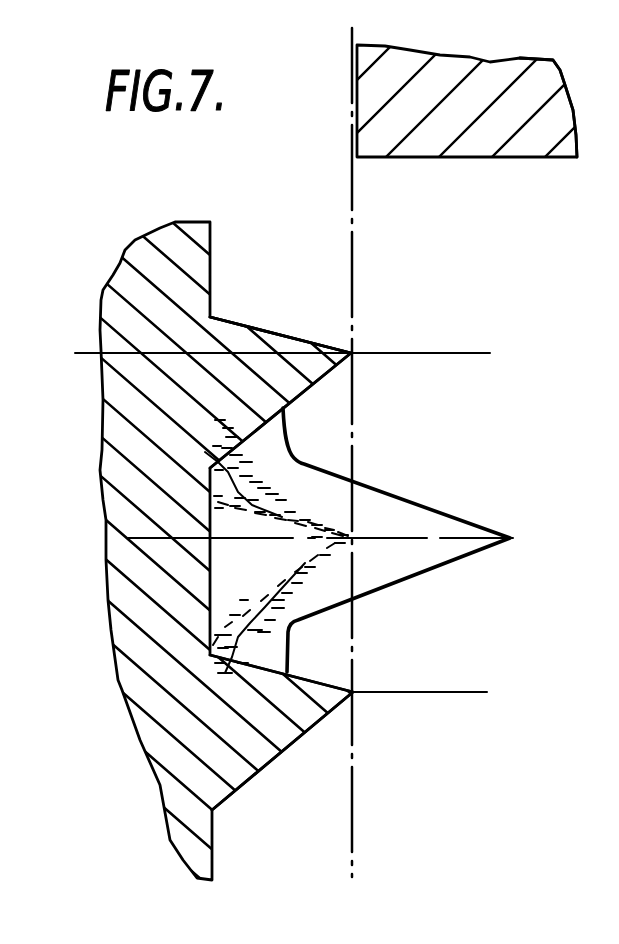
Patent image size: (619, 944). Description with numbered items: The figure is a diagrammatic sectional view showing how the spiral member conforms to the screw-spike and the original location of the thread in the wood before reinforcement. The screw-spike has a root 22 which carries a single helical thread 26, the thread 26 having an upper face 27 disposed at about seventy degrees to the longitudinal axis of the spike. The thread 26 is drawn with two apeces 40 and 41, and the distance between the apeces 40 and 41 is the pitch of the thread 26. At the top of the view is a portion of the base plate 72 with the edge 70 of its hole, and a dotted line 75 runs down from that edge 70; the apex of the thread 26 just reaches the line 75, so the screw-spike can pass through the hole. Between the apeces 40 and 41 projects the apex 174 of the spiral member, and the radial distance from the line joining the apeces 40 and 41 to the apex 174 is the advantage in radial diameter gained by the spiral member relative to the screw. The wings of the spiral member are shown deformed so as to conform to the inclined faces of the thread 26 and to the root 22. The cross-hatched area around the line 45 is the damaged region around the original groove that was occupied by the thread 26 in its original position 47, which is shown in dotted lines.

The root 22 is at (211, 248).
The helical thread 26 is at (311, 333).
The upper face 27 is at (272, 331).
The apex 40 is at (309, 352).
The apex 41 is at (376, 732).
The line 45 is at (277, 507).
The original position 47 is at (240, 546).
The apex of the spiral member 174 is at (513, 537).
The dotted line 75 is at (352, 225).
The edge 70 is at (368, 101).
The base plate 72 is at (520, 60).